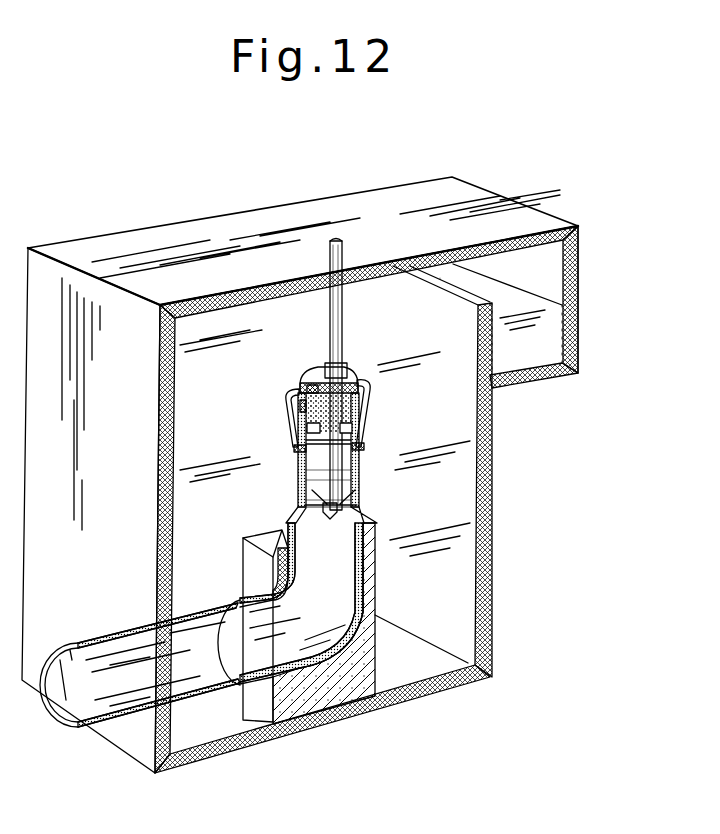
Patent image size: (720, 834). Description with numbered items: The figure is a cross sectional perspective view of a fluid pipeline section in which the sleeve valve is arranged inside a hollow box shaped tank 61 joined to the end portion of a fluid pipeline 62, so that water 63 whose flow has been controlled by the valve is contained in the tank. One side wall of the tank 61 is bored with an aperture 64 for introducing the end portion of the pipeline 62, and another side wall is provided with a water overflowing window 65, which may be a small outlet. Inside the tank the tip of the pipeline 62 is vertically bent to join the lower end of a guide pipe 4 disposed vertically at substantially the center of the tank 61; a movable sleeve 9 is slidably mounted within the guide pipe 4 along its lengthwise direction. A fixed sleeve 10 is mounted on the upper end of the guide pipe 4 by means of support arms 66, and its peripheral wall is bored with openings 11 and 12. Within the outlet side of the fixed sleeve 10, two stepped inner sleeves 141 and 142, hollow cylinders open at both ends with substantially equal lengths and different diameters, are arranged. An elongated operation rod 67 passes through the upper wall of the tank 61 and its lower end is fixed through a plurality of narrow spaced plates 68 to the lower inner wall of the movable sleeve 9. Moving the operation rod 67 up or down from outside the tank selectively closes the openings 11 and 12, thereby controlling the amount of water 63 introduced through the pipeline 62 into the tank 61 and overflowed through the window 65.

The guide pipe 4 is at (358, 497).
The movable sleeve 9 is at (358, 478).
The fixed sleeve 10 is at (350, 402).
The opening 11 is at (304, 421).
The opening 12 is at (350, 443).
The tank 61 is at (202, 212).
The fluid pipeline 62 is at (86, 641).
The fluid 63 is at (380, 347).
The aperture 64 is at (156, 624).
The water overflowing window 65 is at (438, 276).
The support arms 66 is at (288, 426).
The operation rod 67 is at (333, 256).
The narrow spaced plates 68 is at (288, 522).
The inner sleeve 141 is at (305, 388).
The inner sleeve 142 is at (294, 410).